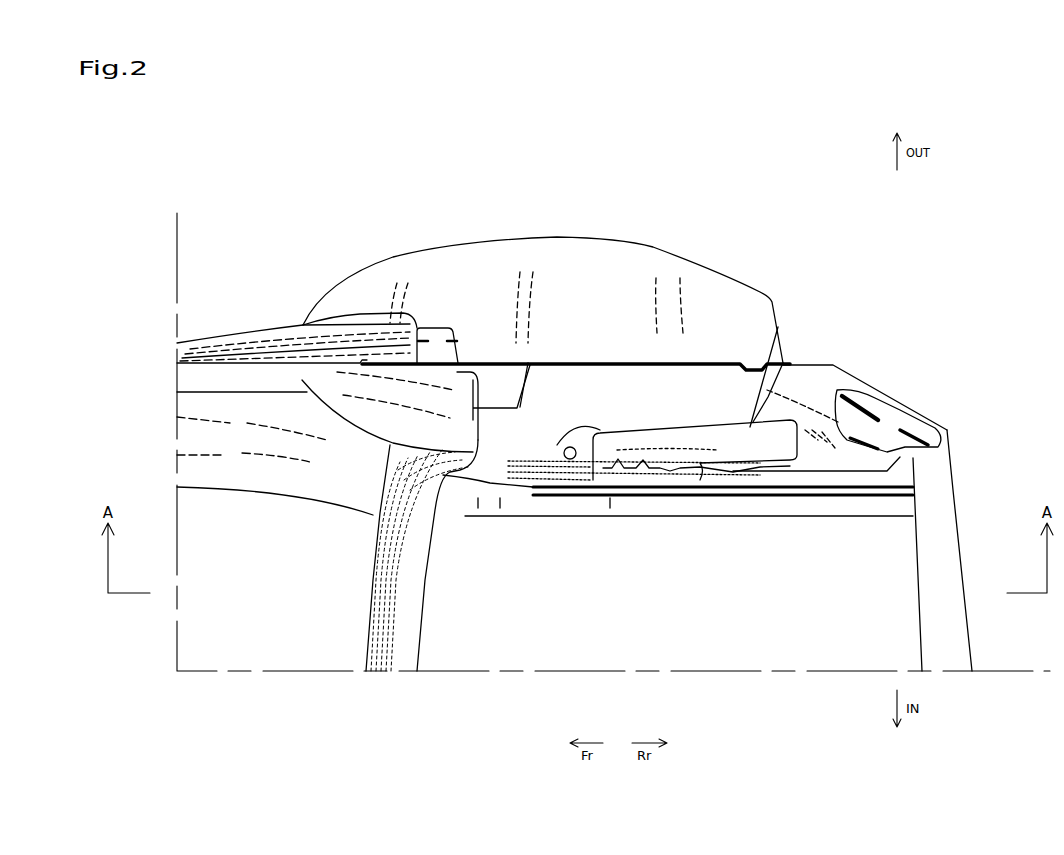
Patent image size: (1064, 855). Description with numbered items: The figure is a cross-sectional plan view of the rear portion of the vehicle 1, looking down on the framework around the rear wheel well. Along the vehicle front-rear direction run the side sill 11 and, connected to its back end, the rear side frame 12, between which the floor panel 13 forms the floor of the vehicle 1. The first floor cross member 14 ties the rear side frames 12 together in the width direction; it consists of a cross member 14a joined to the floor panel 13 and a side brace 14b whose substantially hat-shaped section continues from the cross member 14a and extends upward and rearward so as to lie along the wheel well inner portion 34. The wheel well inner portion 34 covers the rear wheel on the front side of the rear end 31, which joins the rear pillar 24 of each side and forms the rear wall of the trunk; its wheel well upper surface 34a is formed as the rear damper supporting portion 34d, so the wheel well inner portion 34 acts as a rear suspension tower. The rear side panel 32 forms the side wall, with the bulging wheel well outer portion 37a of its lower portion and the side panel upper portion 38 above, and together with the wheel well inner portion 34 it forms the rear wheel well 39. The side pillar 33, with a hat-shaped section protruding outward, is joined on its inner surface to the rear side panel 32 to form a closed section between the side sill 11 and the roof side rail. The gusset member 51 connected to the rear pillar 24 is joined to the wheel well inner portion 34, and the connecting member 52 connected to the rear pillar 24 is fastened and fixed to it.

The vehicle 1 is at (333, 166).
The side sill 11 is at (238, 477).
The rear side frame 12 is at (700, 507).
The floor panel 13 is at (267, 598).
The first floor cross member 14 is at (482, 453).
The cross member 14a is at (407, 628).
The side brace 14b is at (495, 452).
The rear pillar 24 is at (857, 400).
The rear end 31 is at (967, 550).
The rear side panel 32 is at (848, 359).
The side pillar 33 is at (303, 325).
The wheel well inner portion 34 is at (542, 449).
The wheel well upper surface 34a is at (602, 387).
The rear damper supporting portion 34d is at (580, 443).
The wheel well outer portion 37a is at (705, 265).
The side panel upper portion 38 is at (778, 327).
The rear wheel well 39 is at (583, 290).
The gusset member 51 is at (753, 422).
The connecting member 52 is at (667, 470).